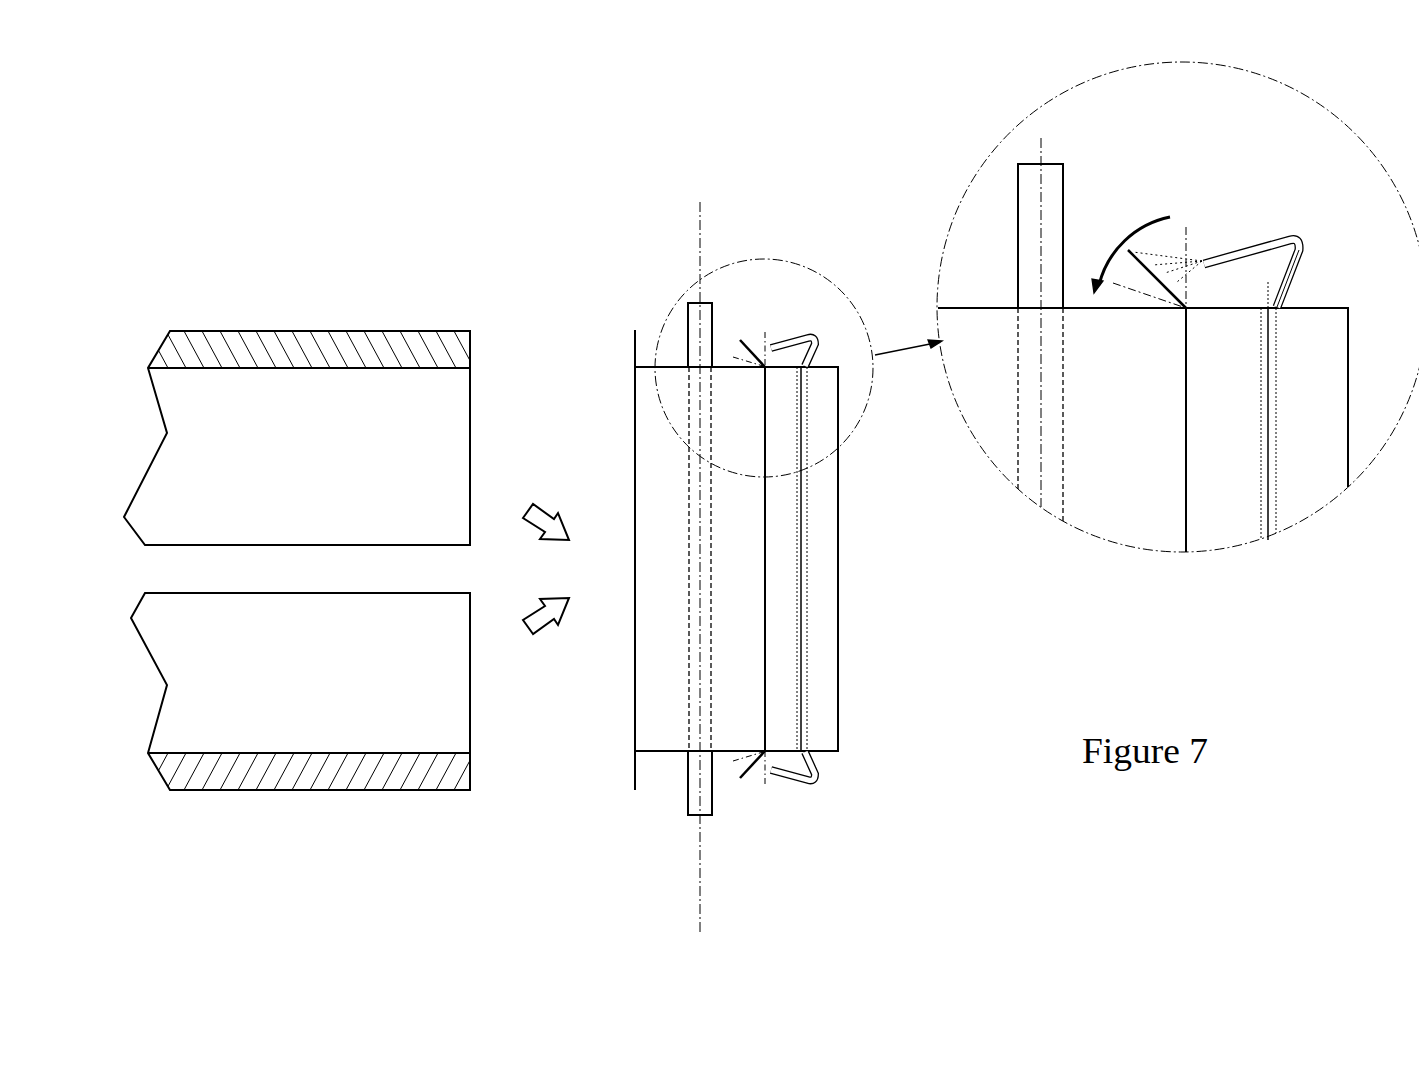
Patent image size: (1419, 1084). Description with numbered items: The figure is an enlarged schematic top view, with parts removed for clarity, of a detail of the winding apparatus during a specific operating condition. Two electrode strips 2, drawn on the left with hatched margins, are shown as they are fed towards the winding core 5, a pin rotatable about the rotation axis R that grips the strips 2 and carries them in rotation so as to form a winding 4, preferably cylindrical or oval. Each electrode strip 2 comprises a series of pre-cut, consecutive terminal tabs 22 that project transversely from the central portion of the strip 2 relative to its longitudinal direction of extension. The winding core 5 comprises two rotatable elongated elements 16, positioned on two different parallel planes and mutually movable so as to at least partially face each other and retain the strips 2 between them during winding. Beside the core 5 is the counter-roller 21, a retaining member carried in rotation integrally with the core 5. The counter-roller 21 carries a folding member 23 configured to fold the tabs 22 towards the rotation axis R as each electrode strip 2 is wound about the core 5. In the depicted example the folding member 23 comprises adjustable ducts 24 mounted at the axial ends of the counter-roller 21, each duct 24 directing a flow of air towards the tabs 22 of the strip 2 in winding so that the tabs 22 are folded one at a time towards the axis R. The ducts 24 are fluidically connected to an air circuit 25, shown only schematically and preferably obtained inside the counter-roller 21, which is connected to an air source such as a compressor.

The electrode strip 2 is at (172, 413).
The terminal tab 22 is at (185, 338).
The winding 4 is at (652, 452).
The winding core 5 is at (713, 305).
The rotatable elongated element 16 is at (692, 805).
The counter-roller 21 is at (828, 569).
The folding member 23 is at (832, 787).
The adjustable duct 24 is at (1303, 258).
The air circuit 25 is at (1268, 440).
The rotation axis R is at (1041, 148).